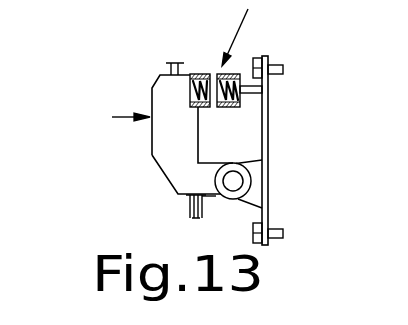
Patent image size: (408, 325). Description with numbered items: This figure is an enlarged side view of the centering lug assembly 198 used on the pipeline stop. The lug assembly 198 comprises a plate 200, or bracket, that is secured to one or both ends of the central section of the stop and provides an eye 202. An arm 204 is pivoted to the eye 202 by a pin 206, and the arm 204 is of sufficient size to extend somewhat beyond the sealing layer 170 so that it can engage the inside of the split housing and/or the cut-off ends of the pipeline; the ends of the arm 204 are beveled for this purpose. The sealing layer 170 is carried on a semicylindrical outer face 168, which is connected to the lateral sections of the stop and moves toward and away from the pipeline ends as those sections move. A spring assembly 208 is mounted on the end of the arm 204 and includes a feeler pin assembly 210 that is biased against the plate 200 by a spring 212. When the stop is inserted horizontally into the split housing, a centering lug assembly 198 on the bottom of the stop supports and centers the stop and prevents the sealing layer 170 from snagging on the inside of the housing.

The centering lug assembly 198 is at (112, 117).
The plate 200 is at (268, 94).
The eye 202 is at (268, 160).
The arm 204 is at (170, 168).
The pin 206 is at (233, 182).
The spring assembly 208 is at (245, 36).
The feeler pin assembly 210 is at (247, 83).
The spring 212 is at (209, 73).
The sealing layer 170 is at (188, 196).
The semicylindrical outer face 168 is at (216, 196).